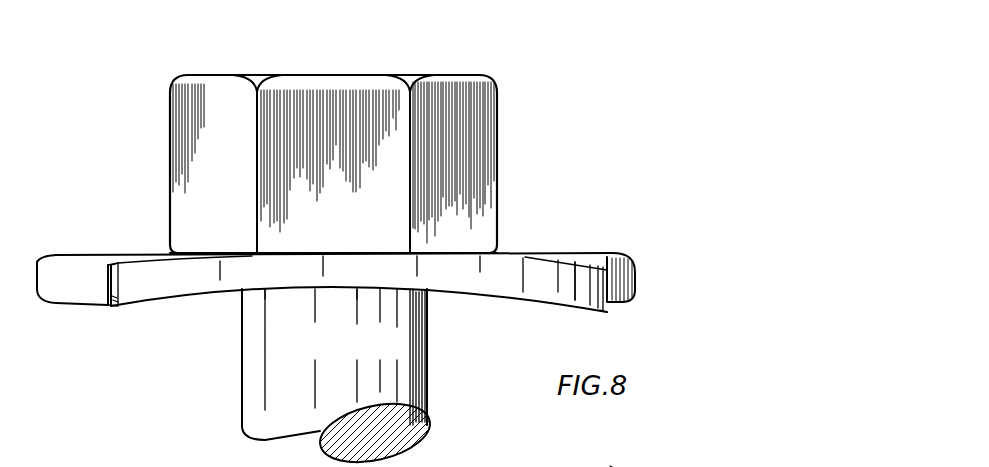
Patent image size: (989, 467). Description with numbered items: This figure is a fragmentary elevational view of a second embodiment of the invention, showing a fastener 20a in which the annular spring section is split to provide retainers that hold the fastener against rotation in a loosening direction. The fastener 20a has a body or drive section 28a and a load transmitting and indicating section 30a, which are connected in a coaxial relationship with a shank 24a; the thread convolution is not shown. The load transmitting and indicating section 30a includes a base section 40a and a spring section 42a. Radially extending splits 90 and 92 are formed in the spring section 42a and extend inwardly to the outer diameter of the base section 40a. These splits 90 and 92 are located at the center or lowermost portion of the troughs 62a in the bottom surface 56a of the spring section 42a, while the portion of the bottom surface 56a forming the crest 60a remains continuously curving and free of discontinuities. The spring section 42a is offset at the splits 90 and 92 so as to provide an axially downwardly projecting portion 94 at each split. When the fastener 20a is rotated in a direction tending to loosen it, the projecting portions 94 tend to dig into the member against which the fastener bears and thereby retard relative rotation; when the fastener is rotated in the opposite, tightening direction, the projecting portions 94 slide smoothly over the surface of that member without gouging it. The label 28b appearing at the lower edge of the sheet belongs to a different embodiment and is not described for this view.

The fastener 20a is at (676, 17).
The body or drive section 28a is at (466, 22).
The load transmitting and indicating section 30a is at (634, 249).
The base section 40a is at (517, 249).
The spring section 42a is at (608, 249).
The troughs 62a is at (627, 303).
The axially downwardly projecting portion 94 is at (118, 308).
The split 90 is at (134, 309).
The split 92 is at (575, 300).
The shank 24a is at (258, 403).
The bottom surface 56a is at (279, 296).
The crest 60a is at (342, 291).
The head 28b is at (640, 466).